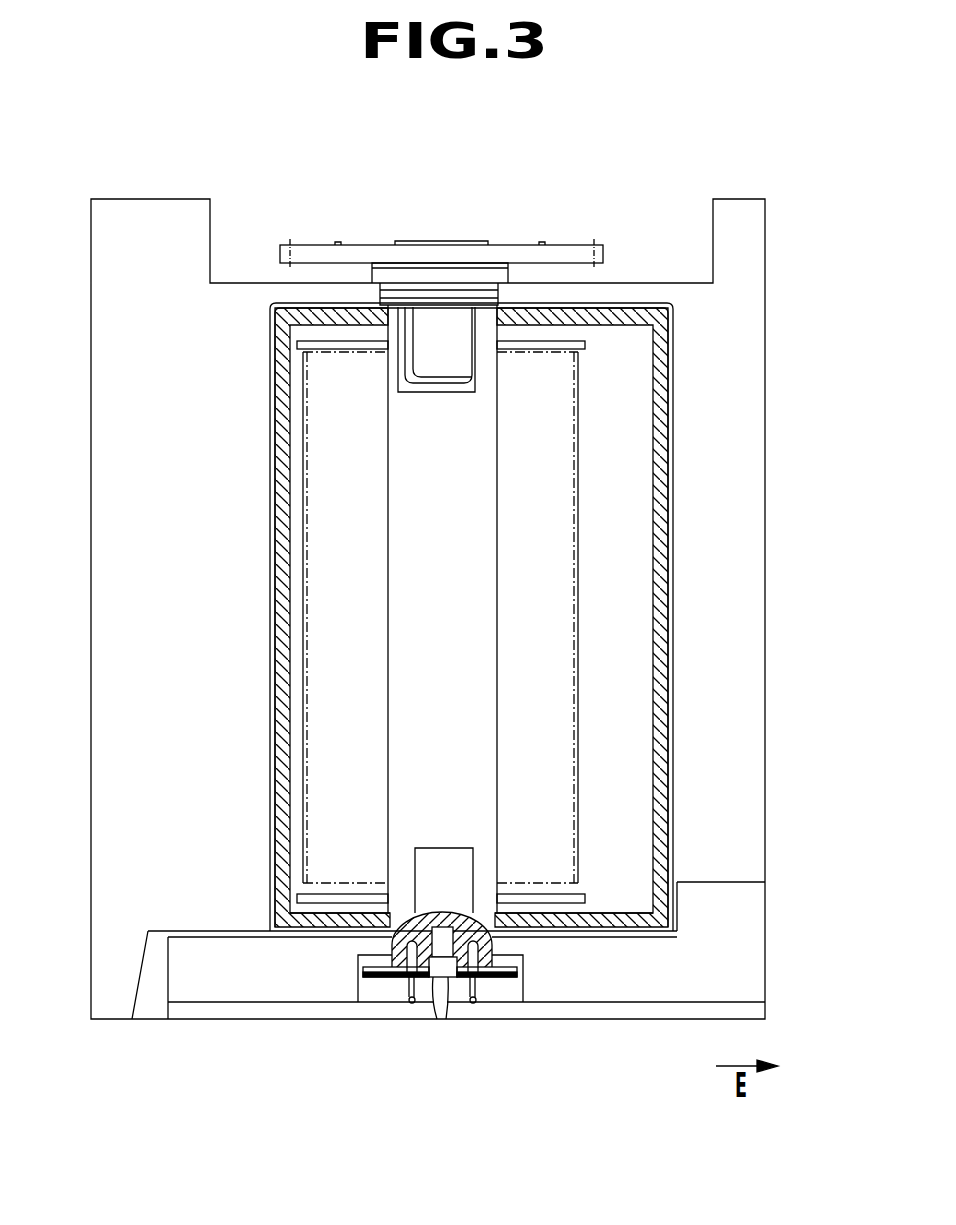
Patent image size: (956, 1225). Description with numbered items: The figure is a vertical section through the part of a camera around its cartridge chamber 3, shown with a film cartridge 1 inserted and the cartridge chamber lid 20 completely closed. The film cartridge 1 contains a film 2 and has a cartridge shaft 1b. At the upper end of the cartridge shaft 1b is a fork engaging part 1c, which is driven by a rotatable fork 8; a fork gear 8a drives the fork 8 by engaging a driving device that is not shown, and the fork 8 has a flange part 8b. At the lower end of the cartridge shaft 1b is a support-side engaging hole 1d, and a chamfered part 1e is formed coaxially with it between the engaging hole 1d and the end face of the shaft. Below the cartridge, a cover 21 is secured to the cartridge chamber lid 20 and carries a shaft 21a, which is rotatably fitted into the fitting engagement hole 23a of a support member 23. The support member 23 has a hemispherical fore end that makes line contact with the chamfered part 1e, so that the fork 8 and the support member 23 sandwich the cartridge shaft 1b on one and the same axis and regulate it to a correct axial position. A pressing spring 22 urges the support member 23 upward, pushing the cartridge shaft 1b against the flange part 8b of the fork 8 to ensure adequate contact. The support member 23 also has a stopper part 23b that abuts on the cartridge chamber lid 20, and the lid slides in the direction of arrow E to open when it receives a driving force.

The film cartridge 1 is at (633, 403).
The cartridge shaft 1b is at (470, 634).
The fork engaging part 1c is at (470, 360).
The engaging hole 1d is at (443, 867).
The chamfered part 1e is at (408, 925).
The film 2 is at (550, 487).
The cartridge chamber 3 is at (673, 568).
The fork 8 is at (447, 320).
The fork gear 8a is at (562, 252).
The flange part 8b is at (407, 304).
The cartridge chamber lid 20 is at (733, 930).
The cover 21 is at (753, 1008).
The shaft 21a is at (444, 985).
The pressing spring 22 is at (474, 1003).
The support member 23 is at (493, 944).
The fitting engagement hole 23a is at (440, 978).
The stopper part 23b is at (380, 978).